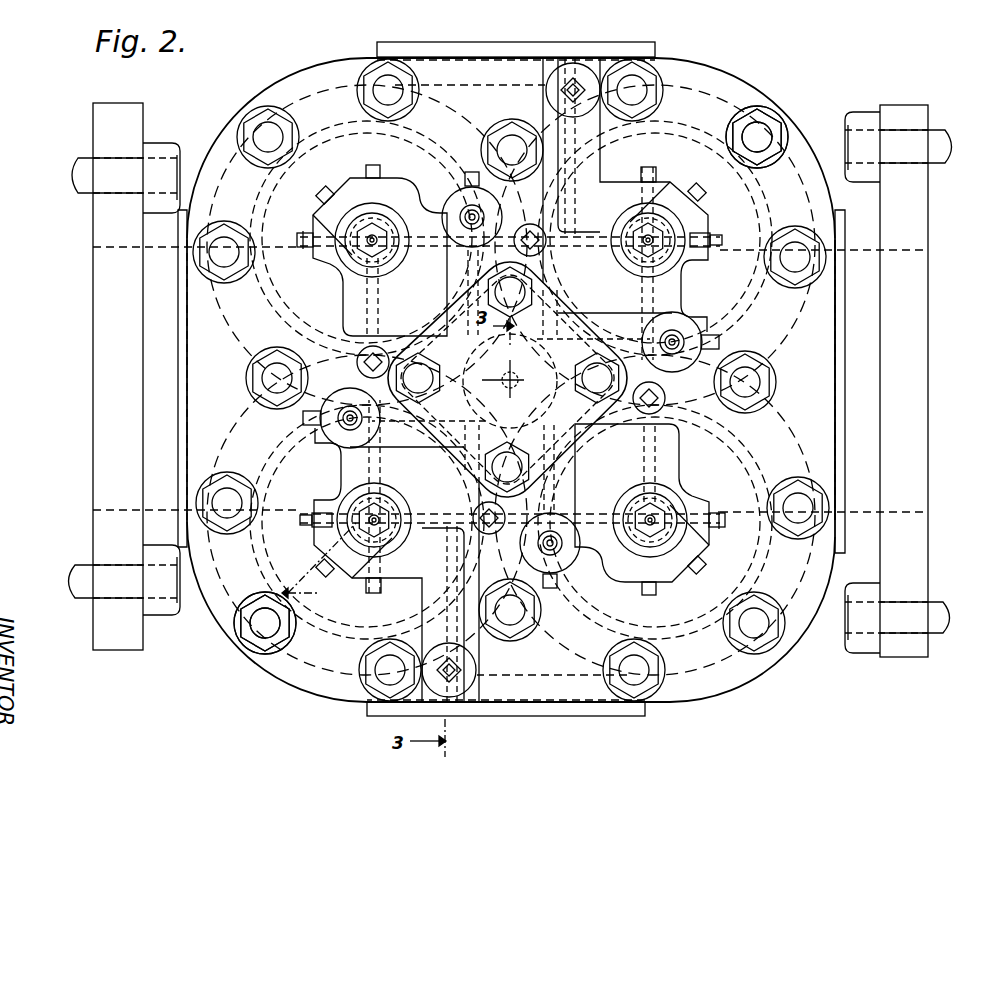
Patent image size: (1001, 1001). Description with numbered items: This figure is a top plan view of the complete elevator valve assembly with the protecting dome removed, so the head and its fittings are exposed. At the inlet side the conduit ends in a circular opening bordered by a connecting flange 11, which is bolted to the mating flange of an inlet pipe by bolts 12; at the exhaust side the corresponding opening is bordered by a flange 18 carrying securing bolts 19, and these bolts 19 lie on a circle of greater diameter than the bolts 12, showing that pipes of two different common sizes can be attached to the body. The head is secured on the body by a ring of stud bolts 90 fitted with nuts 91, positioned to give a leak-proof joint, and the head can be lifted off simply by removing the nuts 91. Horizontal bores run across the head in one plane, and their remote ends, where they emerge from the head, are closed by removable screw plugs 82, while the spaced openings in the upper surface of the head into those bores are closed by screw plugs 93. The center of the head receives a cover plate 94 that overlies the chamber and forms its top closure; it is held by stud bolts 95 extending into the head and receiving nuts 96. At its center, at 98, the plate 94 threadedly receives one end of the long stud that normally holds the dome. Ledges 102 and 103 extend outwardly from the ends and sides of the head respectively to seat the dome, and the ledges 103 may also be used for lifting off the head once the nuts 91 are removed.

The connecting flange 11 is at (108, 103).
The bolts 12 is at (84, 158).
The flange 18 is at (915, 190).
The securing bolts 19 is at (938, 140).
The removable screw plugs 82 is at (378, 177).
The stud bolts 90 is at (762, 124).
The nuts 91 is at (768, 148).
The screw plugs 93 is at (544, 249).
The cover plate 94 is at (568, 423).
The stud bolts 95 is at (590, 380).
The nuts 96 is at (515, 312).
The threaded center of the plate 98 is at (503, 392).
The ledges 102 is at (848, 376).
The ledges 103 is at (613, 710).